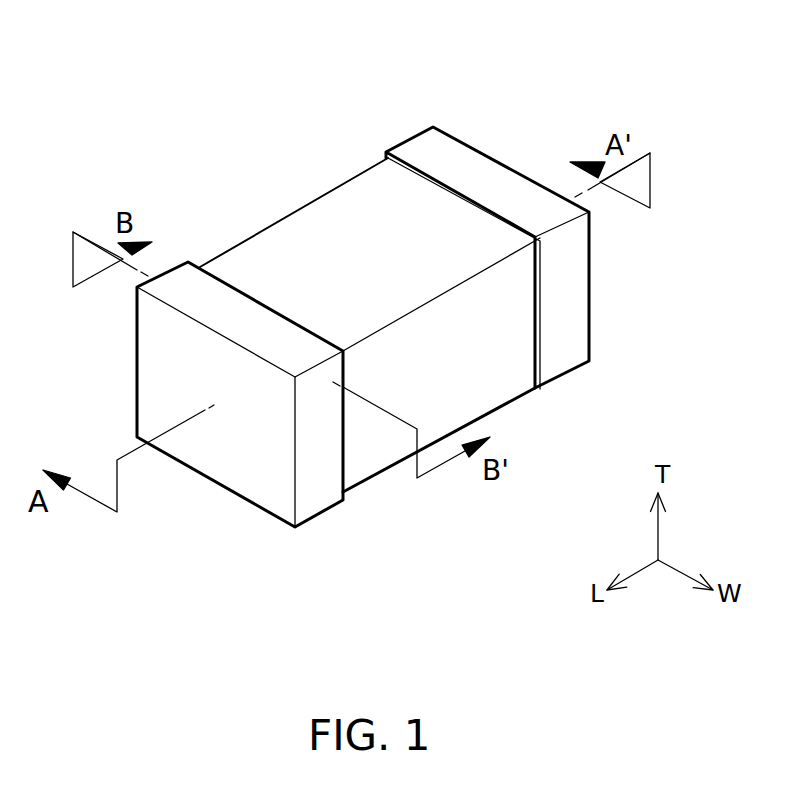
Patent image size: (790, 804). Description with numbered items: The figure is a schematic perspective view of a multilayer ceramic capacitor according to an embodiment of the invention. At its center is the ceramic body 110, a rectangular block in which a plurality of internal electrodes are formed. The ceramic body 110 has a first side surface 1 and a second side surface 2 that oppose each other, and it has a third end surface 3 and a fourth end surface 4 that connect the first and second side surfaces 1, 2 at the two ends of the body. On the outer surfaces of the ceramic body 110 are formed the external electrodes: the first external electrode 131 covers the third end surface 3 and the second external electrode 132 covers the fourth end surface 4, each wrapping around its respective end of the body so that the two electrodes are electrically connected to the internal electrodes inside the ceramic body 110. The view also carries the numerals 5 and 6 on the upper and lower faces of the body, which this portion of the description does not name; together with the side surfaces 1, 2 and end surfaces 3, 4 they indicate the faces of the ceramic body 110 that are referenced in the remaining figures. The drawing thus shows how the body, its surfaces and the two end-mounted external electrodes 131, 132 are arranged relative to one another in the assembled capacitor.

The first side surface 1 is at (437, 329).
The ceramic body 110 is at (379, 315).
The second side surface 2 is at (480, 362).
The third end surface 3 is at (247, 454).
The fourth end surface 4 is at (562, 201).
The first surface (top) of body 5 is at (385, 217).
The second surface (bottom) of body 6 is at (378, 473).
The first external electrode 131 is at (317, 505).
The second external electrode 132 is at (580, 325).